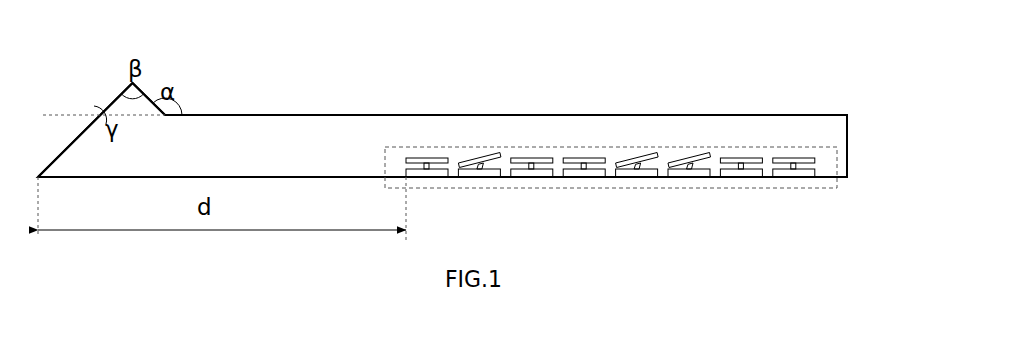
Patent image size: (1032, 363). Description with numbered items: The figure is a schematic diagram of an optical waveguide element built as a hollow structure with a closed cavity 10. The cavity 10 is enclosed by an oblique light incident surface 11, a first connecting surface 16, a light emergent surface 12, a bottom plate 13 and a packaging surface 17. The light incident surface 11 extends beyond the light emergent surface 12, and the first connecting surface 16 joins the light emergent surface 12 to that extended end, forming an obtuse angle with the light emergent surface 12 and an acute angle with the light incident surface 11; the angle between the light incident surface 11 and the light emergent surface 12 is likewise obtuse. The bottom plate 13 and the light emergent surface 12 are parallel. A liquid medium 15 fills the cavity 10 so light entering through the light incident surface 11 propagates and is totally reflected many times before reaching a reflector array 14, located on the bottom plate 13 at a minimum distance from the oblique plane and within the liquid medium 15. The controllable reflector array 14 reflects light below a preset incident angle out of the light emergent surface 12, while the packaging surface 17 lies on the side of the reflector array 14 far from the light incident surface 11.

The cavity 10 is at (423, 112).
The light incident surface 11 is at (81, 133).
The light emergent surface 12 is at (323, 115).
The bottom plate 13 is at (323, 177).
The reflector array 14 is at (542, 147).
The liquid medium 15 is at (207, 137).
The first connecting surface 16 is at (144, 94).
The packaging surface 17 is at (847, 142).